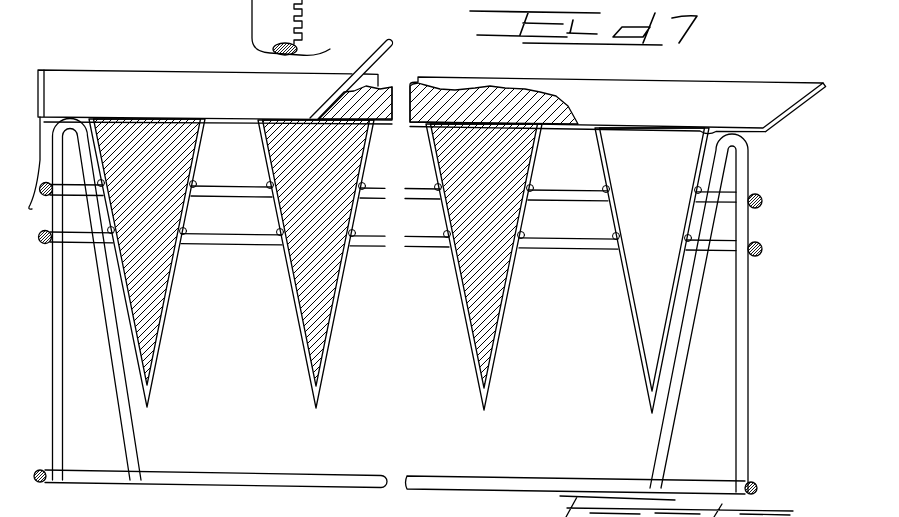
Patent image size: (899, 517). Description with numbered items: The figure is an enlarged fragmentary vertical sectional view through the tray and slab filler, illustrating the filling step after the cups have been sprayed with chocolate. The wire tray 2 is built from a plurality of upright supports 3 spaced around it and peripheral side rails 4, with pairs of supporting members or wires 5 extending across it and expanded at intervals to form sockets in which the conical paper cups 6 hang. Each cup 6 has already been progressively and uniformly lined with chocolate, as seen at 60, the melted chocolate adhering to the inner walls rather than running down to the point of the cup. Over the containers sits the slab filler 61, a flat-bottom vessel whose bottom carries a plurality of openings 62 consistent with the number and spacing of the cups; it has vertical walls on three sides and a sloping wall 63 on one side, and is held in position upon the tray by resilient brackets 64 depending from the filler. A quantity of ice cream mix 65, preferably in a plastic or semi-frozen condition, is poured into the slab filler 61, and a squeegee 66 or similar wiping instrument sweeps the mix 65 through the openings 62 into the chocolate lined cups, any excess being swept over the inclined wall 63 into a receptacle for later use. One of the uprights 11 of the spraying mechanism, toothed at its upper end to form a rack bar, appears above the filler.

The tray 2 is at (754, 179).
The upright supports 3 is at (742, 342).
The peripheral side rails 4 is at (760, 243).
The supporting members 5 is at (608, 240).
The cup 6 is at (292, 294).
The uprights 11 is at (310, 51).
The chocolate lining 60 is at (462, 294).
The slab filler 61 is at (170, 62).
The openings 62 is at (613, 132).
The sloping wall 63 is at (810, 96).
The resilient brackets 64 is at (52, 130).
The ice cream mix 65 is at (440, 95).
The squeegee 66 is at (378, 41).